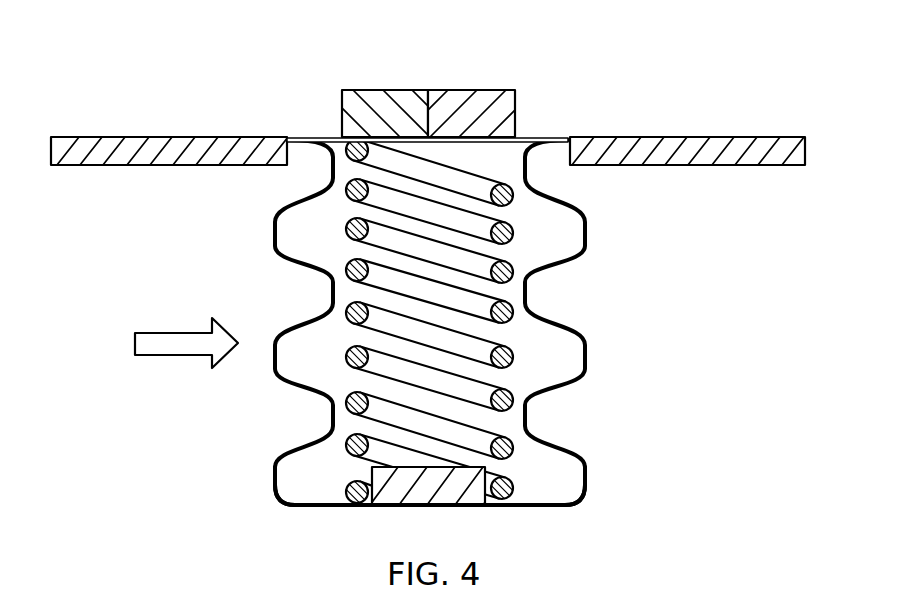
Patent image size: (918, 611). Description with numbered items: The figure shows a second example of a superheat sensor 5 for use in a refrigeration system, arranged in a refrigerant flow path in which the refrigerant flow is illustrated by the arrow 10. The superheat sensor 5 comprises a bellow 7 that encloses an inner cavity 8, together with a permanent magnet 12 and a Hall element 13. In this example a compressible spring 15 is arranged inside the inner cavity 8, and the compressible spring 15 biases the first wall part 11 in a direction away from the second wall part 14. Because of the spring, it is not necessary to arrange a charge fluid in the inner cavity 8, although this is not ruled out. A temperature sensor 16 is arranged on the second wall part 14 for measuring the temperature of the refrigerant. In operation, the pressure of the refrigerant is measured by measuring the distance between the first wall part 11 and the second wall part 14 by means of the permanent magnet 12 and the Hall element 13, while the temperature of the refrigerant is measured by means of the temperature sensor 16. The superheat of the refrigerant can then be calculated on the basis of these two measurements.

The superheat sensor 5 is at (441, 278).
The bellow 7 is at (580, 376).
The inner cavity 8 is at (568, 470).
The arrow 10 is at (163, 346).
The first wall part 11 is at (337, 507).
The permanent magnet 12 is at (470, 507).
The Hall element 13 is at (381, 92).
The second wall part 14 is at (318, 138).
The compressible spring 15 is at (508, 181).
The temperature sensor 16 is at (481, 92).